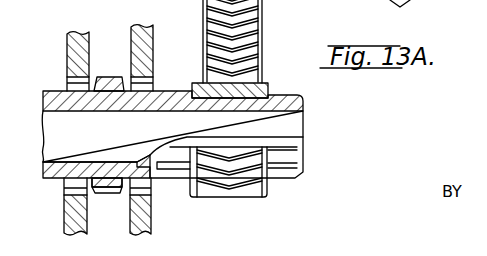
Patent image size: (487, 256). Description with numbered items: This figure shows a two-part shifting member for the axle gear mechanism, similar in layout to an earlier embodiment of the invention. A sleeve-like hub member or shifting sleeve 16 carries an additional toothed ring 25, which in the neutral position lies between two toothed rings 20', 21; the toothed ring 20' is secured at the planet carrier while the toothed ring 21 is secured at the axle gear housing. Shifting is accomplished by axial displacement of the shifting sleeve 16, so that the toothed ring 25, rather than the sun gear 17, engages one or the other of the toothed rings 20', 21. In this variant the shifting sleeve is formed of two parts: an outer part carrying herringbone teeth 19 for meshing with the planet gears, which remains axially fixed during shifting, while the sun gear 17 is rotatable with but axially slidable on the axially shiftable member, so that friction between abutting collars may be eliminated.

The shifting sleeve 16 is at (55, 176).
The sun gear 17 is at (267, 83).
The teeth 19 is at (262, 9).
The toothed ring 20' is at (157, 58).
The toothed ring 21 is at (67, 56).
The toothed ring 25 is at (106, 77).